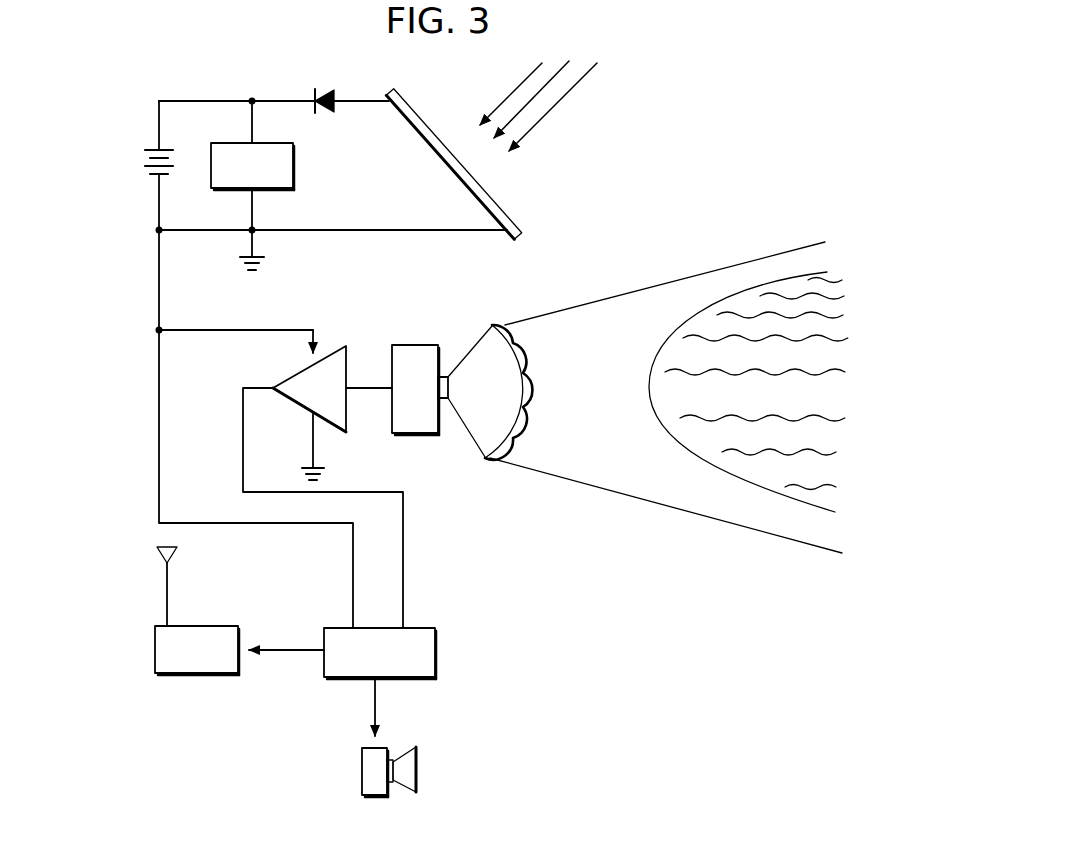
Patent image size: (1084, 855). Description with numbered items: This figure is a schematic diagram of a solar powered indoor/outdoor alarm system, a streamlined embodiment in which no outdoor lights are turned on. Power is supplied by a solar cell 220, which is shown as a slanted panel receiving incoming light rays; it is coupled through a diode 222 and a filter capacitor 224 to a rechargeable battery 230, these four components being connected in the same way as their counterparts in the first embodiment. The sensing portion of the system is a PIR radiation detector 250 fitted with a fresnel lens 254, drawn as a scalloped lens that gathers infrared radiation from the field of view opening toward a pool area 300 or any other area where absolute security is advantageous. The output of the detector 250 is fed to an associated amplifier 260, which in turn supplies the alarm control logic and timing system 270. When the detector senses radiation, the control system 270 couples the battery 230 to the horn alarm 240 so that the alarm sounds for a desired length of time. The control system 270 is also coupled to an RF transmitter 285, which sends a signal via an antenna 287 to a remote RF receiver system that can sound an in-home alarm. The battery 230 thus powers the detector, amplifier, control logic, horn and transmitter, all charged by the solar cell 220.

The solar cell 220 is at (505, 205).
The diode 222 is at (324, 90).
The filter capacitor 224 is at (296, 167).
The rechargeable battery 230 is at (152, 148).
The horn alarm 240 is at (361, 766).
The PIR radiation detector 250 is at (415, 345).
The fresnel lens 254 is at (533, 390).
The amplifier 260 is at (333, 348).
The alarm control logic and timing system 270 is at (437, 648).
The RF transmitter 285 is at (210, 676).
The antenna 287 is at (178, 553).
The pool area 300 is at (765, 409).